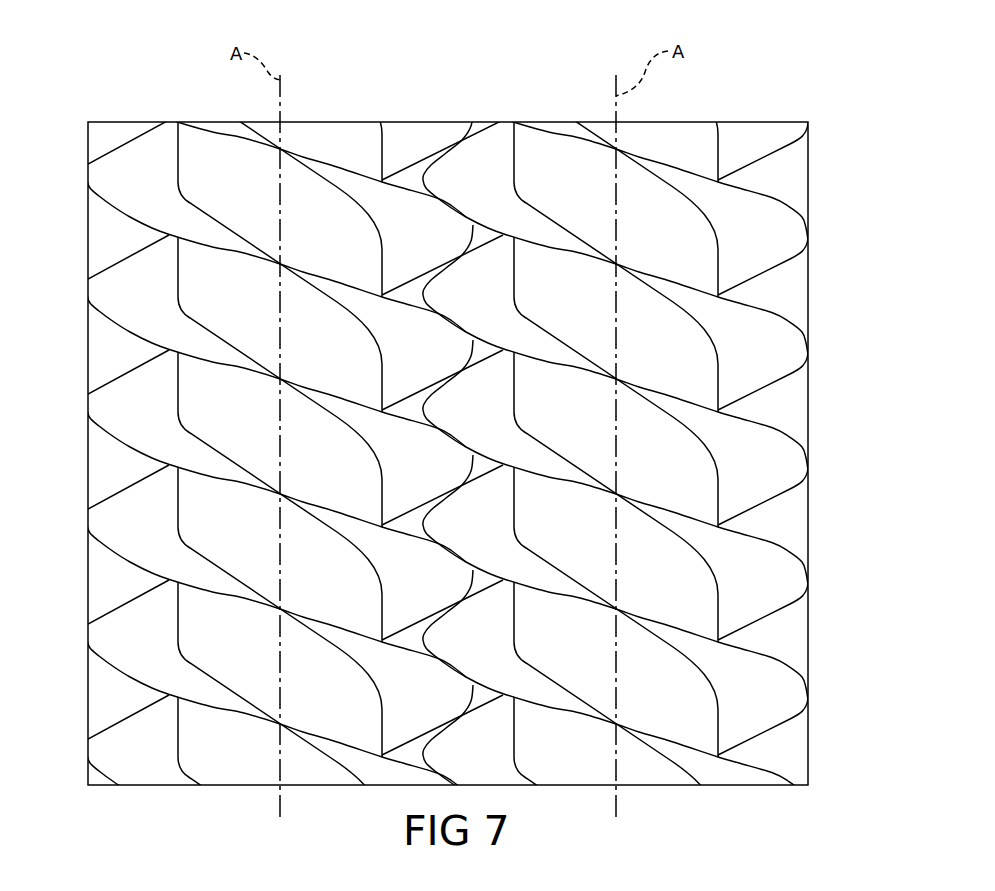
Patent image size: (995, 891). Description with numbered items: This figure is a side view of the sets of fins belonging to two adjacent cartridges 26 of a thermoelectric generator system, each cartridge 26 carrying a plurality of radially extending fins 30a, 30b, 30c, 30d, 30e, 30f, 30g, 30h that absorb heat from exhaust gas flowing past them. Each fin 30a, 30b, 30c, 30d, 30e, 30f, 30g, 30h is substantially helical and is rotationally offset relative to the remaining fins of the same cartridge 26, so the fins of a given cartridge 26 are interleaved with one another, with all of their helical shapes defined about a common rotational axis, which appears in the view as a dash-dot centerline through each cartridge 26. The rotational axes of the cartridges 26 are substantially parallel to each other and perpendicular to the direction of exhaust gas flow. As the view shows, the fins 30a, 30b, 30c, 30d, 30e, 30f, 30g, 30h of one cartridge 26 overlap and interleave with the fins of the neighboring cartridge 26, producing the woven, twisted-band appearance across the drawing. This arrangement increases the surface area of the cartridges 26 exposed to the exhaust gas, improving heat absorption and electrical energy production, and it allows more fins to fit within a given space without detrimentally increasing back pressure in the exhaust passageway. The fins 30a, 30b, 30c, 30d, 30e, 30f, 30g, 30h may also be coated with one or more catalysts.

The cartridge 26 is at (147, 116).
The fin 30a is at (418, 140).
The fin 30b is at (213, 128).
The fin 30c is at (127, 189).
The fin 30d is at (131, 280).
The fin 30e is at (127, 396).
The fin 30f is at (127, 516).
The fin 30g is at (127, 628).
The fin 30h is at (127, 740).